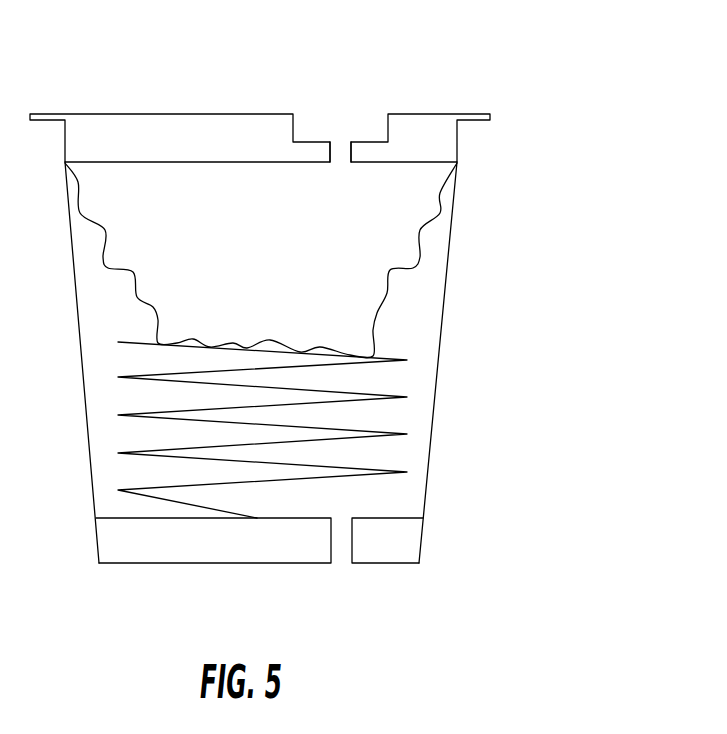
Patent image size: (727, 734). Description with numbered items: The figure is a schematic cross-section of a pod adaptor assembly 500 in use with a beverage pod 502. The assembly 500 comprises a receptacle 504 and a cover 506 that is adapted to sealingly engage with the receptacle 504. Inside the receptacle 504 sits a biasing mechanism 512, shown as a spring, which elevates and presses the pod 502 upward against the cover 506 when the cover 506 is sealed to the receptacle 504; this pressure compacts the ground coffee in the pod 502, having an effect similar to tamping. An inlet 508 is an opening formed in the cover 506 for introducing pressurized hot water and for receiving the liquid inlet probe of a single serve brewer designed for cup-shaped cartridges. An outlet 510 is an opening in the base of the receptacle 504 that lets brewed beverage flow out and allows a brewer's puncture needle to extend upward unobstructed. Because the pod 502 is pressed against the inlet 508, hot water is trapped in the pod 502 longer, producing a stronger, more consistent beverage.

The pod adaptor assembly 500 is at (542, 200).
The beverage pod 502 is at (273, 257).
The receptacle 504 is at (445, 317).
The cover 506 is at (75, 130).
The inlet 508 is at (340, 137).
The outlet 510 is at (342, 563).
The biasing mechanism 512 is at (423, 398).